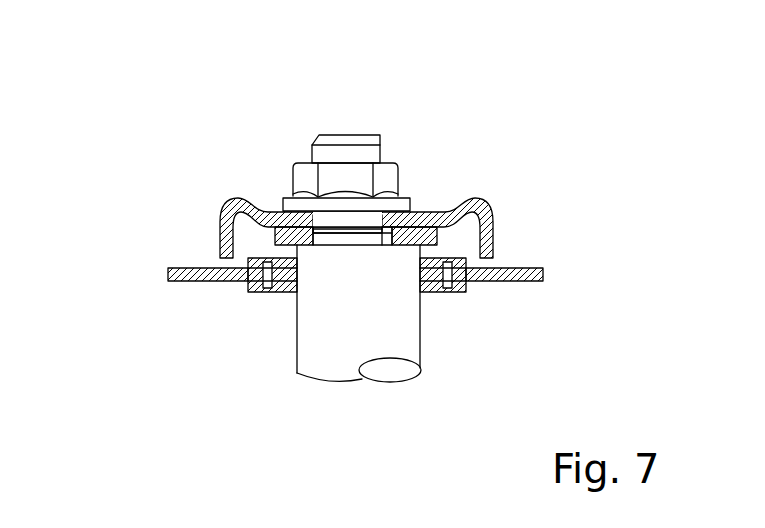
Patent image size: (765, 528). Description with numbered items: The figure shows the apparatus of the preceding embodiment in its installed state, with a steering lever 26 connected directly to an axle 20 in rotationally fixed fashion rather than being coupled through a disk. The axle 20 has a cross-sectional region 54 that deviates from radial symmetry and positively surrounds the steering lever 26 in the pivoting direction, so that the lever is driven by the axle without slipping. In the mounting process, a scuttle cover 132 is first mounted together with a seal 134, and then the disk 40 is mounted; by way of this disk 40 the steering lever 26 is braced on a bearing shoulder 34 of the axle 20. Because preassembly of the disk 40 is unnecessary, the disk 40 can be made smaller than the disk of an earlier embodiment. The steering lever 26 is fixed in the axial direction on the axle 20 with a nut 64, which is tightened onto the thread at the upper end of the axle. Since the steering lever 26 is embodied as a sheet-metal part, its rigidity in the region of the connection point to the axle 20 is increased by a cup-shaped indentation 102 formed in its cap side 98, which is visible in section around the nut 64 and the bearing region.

The axle 20 is at (322, 343).
The steering lever 26 is at (493, 236).
The bearing shoulder 34 is at (283, 247).
The disk 40 is at (527, 282).
The cross-sectional region 54 is at (375, 153).
The nut 64 is at (350, 167).
The cap side 98 is at (438, 245).
The cup-shaped indentation 102 is at (267, 210).
The scuttle cover 132 is at (168, 280).
The seal 134 is at (266, 291).